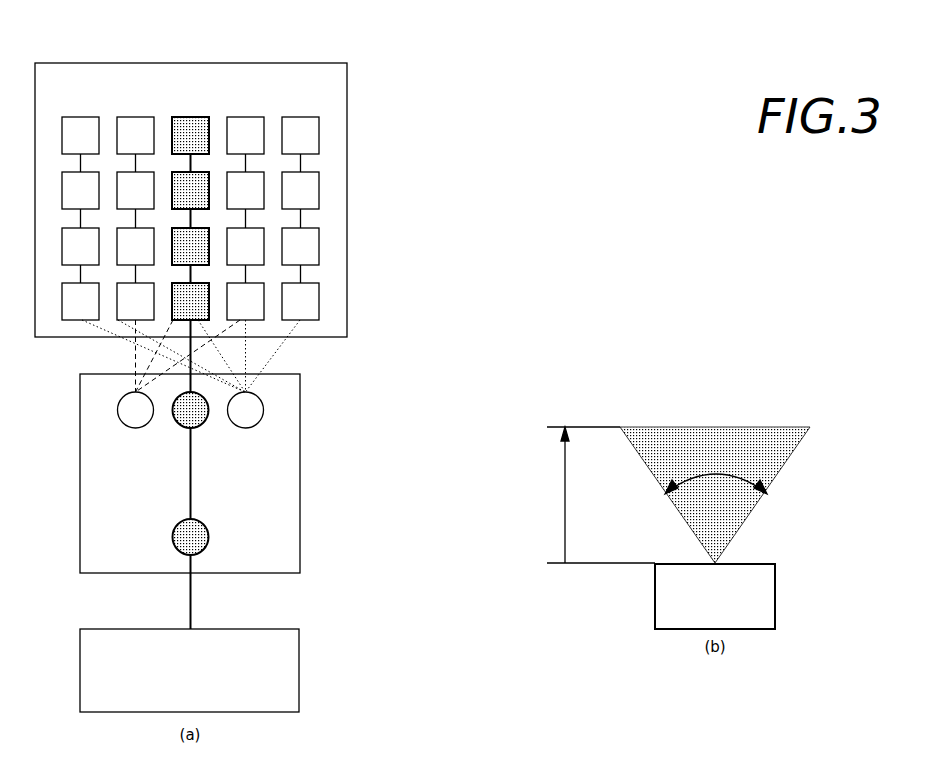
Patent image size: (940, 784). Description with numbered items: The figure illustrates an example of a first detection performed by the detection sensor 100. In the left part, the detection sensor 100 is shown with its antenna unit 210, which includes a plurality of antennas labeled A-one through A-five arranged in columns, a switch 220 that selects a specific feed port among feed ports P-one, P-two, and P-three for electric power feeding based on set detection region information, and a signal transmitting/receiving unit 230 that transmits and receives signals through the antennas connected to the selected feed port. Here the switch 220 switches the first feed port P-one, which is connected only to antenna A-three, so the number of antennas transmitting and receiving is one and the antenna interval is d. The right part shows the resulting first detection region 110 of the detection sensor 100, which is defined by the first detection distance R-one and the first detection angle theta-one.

The detection sensor 100 is at (775, 593).
The first detection region 110 is at (773, 483).
The antenna unit 210 is at (347, 165).
The switch 220 is at (300, 474).
The signal transmitting/receiving unit 230 is at (299, 673).